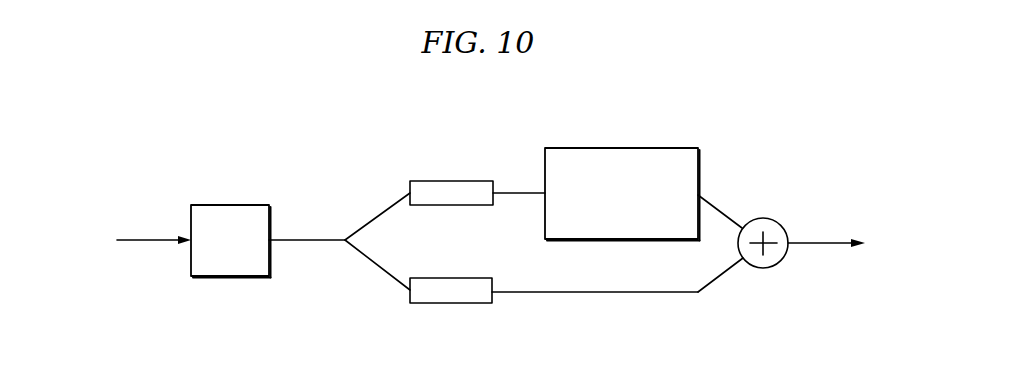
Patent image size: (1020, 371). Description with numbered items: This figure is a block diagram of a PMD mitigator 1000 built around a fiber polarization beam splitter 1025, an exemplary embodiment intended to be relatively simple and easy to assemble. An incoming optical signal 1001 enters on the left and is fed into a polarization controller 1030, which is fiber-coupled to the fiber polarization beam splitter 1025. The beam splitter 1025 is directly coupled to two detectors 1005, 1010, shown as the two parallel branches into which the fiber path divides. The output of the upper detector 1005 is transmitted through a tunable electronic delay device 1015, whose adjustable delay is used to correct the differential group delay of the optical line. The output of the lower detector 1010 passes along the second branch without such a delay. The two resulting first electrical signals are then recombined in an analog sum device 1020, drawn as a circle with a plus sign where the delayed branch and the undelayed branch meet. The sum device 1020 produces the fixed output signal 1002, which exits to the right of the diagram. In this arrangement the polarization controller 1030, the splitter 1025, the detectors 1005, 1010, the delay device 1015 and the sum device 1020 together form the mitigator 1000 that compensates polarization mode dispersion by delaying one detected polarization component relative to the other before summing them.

The PMD mitigator 1000 is at (728, 114).
The input optical signal 1001 is at (150, 242).
The fixed output signal 1002 is at (797, 247).
The detector 1005 is at (435, 207).
The detector 1010 is at (435, 304).
The tunable electronic delay device 1015 is at (698, 175).
The analog sum device 1020 is at (783, 223).
The fiber polarization beam splitter 1025 is at (317, 238).
The polarization controller 1030 is at (207, 277).